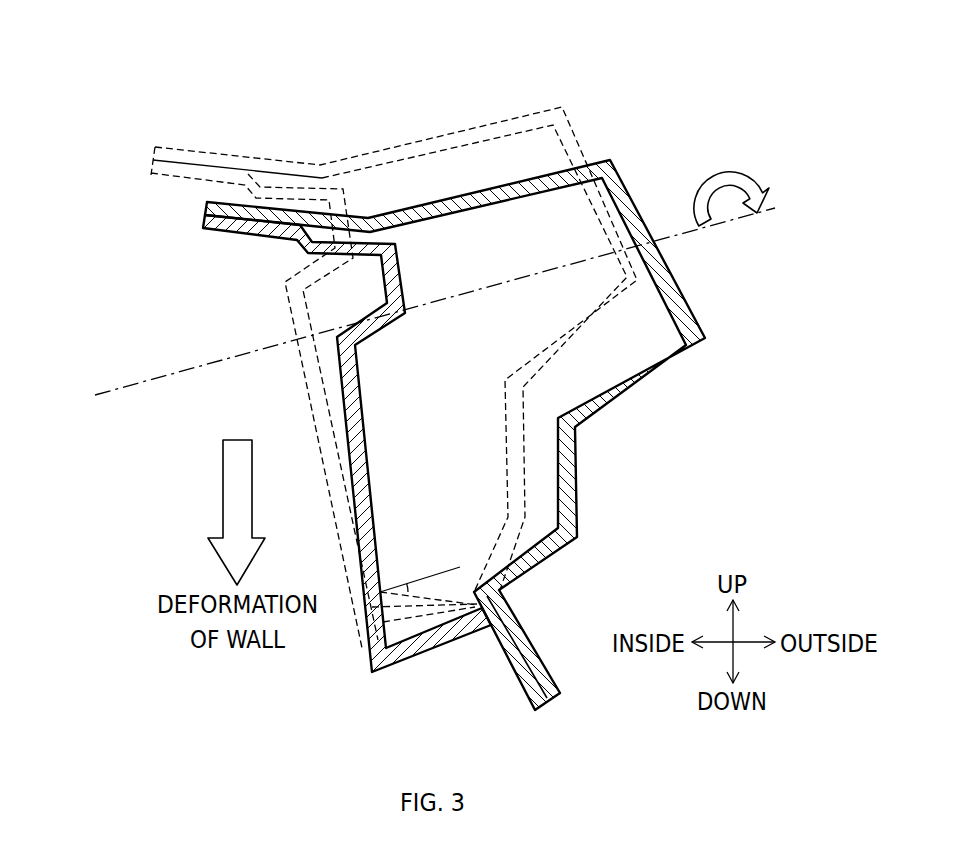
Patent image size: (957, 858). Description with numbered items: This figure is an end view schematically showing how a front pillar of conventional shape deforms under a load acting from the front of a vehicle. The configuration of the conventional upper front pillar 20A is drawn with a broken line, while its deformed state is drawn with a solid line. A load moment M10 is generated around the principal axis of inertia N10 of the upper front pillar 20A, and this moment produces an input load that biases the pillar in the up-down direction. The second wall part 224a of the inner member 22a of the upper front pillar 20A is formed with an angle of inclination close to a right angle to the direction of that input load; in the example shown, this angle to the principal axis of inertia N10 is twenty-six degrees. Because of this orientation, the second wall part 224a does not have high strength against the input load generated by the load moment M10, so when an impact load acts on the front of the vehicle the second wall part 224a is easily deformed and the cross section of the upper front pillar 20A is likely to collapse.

The conventional upper front pillar 20A is at (422, 110).
The principal axis of inertia N10 is at (410, 308).
The load moment M10 is at (746, 188).
The inner member 22a is at (288, 307).
The second wall part 224a is at (375, 648).